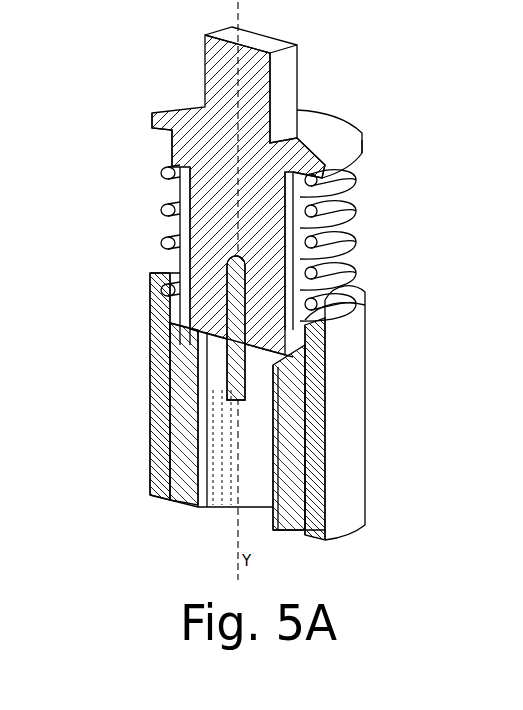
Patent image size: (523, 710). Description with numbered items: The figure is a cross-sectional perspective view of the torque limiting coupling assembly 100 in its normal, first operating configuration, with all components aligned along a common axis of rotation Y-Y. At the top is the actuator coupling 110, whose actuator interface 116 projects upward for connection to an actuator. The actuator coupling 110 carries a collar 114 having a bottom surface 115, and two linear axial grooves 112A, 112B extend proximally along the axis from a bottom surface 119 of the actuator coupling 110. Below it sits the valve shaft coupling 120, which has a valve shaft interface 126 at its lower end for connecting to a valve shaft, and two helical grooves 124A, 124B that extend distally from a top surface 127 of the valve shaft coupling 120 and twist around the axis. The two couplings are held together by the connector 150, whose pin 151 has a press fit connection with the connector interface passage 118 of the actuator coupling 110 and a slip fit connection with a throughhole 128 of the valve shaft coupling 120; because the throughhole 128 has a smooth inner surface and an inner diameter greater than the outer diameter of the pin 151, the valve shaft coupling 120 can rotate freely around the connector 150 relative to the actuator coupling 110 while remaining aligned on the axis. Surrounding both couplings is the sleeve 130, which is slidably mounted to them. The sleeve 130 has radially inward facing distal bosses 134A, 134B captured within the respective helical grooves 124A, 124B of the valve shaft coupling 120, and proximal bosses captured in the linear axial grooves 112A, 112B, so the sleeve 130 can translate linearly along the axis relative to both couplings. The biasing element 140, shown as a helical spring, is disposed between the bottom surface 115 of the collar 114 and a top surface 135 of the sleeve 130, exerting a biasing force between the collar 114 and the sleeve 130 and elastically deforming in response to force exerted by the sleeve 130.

The torque limiting coupling assembly 100 is at (147, 44).
The actuator coupling 110 is at (347, 120).
The linear axial groove 112A is at (358, 248).
The linear axial groove 112B is at (178, 195).
The collar 114 is at (358, 147).
The bottom surface 115 is at (352, 183).
The actuator interface 116 is at (300, 74).
The connector interface passage 118 is at (187, 223).
The bottom surface 119 is at (205, 352).
The valve shaft coupling 120 is at (293, 537).
The helical groove 124A is at (255, 352).
The helical groove 124B is at (195, 355).
The valve shaft interface 126 is at (220, 513).
The top surface 127 is at (250, 322).
The throughhole 128 is at (262, 372).
The sleeve 130 is at (357, 530).
The radially inward facing distal boss 134A is at (313, 317).
The radially inward facing distal boss 134B is at (160, 264).
The top surface 135 is at (350, 285).
The biasing element 140 is at (345, 270).
The connector 150 is at (195, 388).
The pin 151 is at (228, 292).